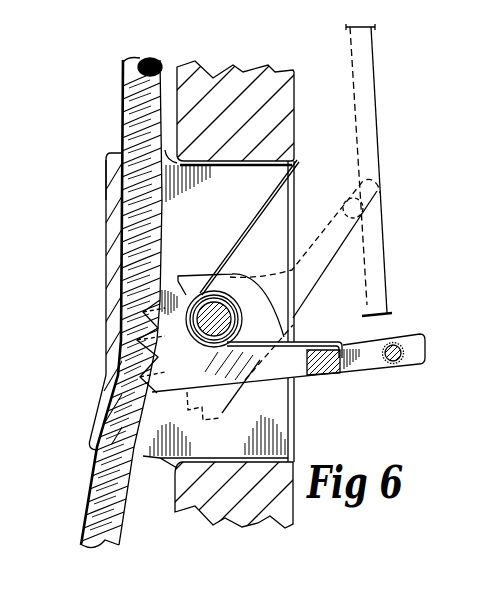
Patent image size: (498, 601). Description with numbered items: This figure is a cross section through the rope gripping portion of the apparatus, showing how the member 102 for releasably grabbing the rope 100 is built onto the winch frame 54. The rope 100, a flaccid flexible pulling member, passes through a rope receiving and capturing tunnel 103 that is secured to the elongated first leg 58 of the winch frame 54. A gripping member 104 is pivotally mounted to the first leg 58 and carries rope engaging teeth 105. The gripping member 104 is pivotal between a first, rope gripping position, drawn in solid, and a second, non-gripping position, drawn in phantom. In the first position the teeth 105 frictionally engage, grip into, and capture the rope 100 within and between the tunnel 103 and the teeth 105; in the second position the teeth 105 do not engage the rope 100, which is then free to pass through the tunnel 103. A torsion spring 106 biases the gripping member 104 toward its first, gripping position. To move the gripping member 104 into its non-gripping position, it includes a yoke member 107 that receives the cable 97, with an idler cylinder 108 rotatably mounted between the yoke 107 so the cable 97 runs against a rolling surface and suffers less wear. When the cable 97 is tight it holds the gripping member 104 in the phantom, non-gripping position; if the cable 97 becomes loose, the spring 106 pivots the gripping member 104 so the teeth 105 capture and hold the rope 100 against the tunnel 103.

The winch frame 54 is at (299, 74).
The first leg 58 is at (296, 112).
The cable 97 is at (377, 147).
The rope 100 is at (122, 82).
The rope gripping member 102 is at (107, 167).
The rope receiving and capturing tunnel 103 is at (107, 237).
The gripping member 104 is at (420, 333).
The rope engaging teeth 105 is at (147, 343).
The torsion spring 106 is at (294, 160).
The yoke member 107 is at (423, 360).
The idler cylinder 108 is at (380, 367).